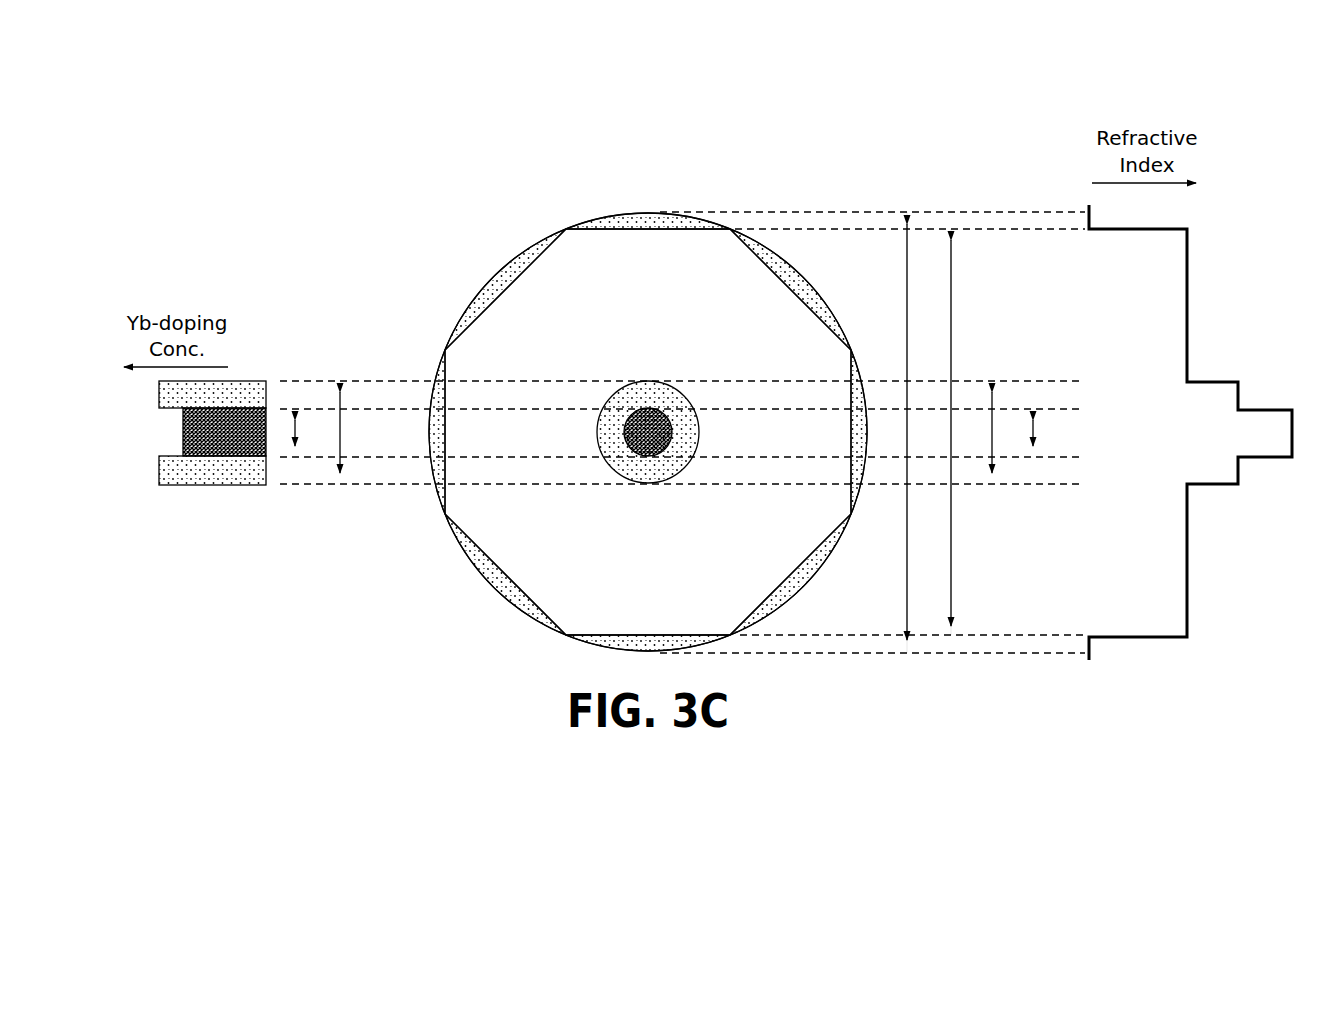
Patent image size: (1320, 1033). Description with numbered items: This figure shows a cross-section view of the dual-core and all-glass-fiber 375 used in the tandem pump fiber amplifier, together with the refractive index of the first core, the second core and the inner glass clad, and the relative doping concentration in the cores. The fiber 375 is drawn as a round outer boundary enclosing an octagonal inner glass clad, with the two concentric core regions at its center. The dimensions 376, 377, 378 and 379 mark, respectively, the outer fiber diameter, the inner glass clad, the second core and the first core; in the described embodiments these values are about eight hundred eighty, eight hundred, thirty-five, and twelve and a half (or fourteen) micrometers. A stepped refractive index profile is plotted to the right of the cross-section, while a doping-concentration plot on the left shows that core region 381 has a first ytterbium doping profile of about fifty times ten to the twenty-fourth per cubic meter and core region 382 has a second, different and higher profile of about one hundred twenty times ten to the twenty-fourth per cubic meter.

The dual-core and all-glass-fiber 375 is at (512, 142).
The outer diameter value 376 is at (900, 275).
The inner glass clad dimension value 377 is at (955, 275).
The second core diameter value 378 is at (994, 403).
The first core diameter value 379 is at (1040, 434).
The core region 381 is at (181, 434).
The core region 382 is at (157, 471).